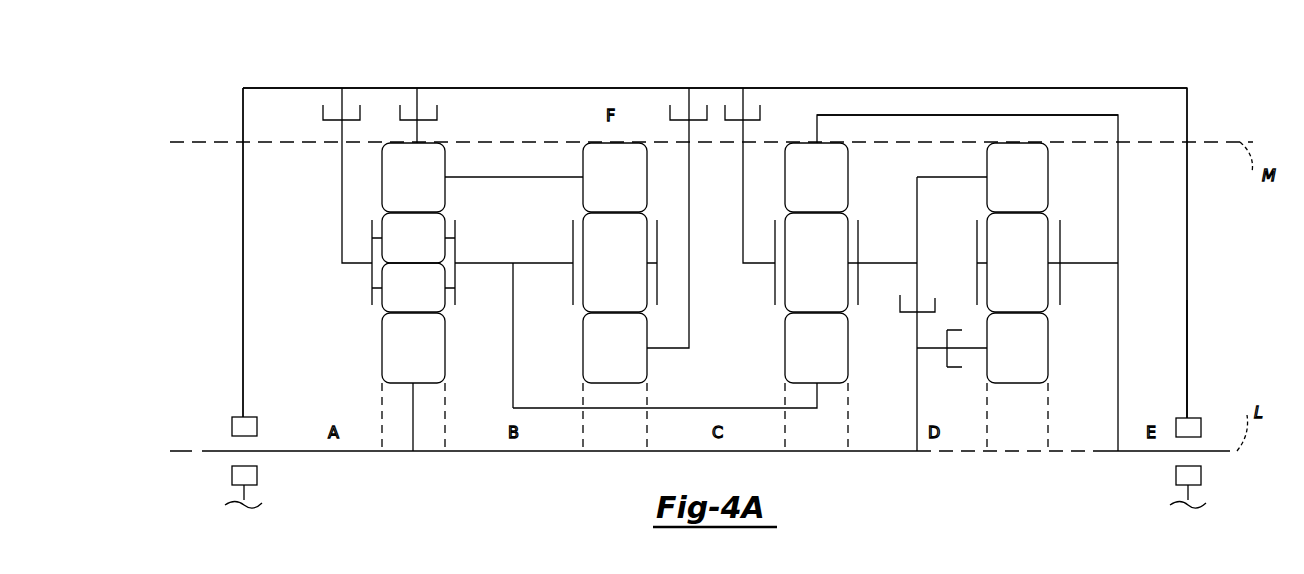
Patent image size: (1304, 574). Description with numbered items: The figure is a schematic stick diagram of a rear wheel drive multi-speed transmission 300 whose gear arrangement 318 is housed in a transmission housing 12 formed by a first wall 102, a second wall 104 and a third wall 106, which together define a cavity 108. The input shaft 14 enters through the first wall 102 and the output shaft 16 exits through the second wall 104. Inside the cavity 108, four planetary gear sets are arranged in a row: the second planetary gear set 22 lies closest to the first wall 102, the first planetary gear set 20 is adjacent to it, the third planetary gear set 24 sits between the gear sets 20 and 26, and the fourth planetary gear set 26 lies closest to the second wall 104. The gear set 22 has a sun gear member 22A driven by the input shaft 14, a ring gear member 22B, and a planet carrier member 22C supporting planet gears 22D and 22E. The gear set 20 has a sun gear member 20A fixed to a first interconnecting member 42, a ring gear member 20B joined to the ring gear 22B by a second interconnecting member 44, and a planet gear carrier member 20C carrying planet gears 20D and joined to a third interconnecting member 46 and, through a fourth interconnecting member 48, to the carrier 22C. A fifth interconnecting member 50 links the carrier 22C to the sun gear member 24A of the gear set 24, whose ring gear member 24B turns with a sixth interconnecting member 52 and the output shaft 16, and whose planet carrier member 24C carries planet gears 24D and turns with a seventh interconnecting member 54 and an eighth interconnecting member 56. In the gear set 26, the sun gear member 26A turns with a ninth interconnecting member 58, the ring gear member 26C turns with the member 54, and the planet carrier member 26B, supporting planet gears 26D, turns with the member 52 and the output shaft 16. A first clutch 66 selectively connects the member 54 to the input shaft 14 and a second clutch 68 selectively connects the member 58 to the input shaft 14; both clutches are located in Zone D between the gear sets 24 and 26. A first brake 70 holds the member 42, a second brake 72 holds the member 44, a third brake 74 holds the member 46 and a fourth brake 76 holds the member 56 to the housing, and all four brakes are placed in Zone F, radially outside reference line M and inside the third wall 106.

The transmission 300 is at (1170, 67).
The gear arrangement 318 is at (1147, 123).
The third wall or structural member 106 is at (565, 87).
The first wall or structural member 102 is at (243, 250).
The input shaft or member 14 is at (220, 451).
The transmission housing 12 is at (1187, 235).
The second wall or structural member 104 is at (1187, 325).
The space or cavity 108 is at (1153, 350).
The output shaft or member 16 is at (1147, 452).
The third brake 74 is at (358, 105).
The second brake 72 is at (440, 106).
The first brake 70 is at (670, 105).
The fourth brake 76 is at (760, 105).
The sixth shaft or interconnecting member 52 is at (940, 115).
The third shaft or interconnecting member 46 is at (342, 192).
The second shaft or interconnecting member 44 is at (418, 133).
The second planetary gear set 22 is at (445, 336).
The sun gear member 22A is at (405, 362).
The ring gear member 22B is at (405, 190).
The planet carrier member 22C is at (455, 228).
The planet gears 22D is at (405, 250).
The planet gears 22E is at (405, 302).
The first planetary gear set 20 is at (592, 336).
The sun gear member 20A is at (607, 362).
The ring gear member 20B is at (607, 190).
The planet gear carrier member 20C is at (573, 283).
The planet gears 20D is at (607, 275).
The fourth shaft or interconnecting member 48 is at (533, 263).
The first shaft or interconnecting member 42 is at (689, 325).
The eighth shaft or interconnecting member 56 is at (741, 190).
The fifth shaft or interconnecting member 50 is at (742, 407).
The third planetary gear set 24 is at (846, 336).
The sun gear member 24A is at (808, 362).
The ring gear member 24B is at (808, 190).
The planet carrier member 24C is at (858, 230).
The planet gears 24D is at (808, 275).
The seventh shaft or interconnecting member 54 is at (950, 177).
The first clutch 66 is at (935, 298).
The second clutch 68 is at (945, 357).
The ninth shaft or interconnecting member 58 is at (977, 340).
The fourth planetary gear set 26 is at (1047, 336).
The sun gear member 26A is at (1009, 362).
The planet carrier member 26B is at (1060, 230).
The ring gear member 26C is at (1009, 190).
The planet gears 26D is at (1009, 275).